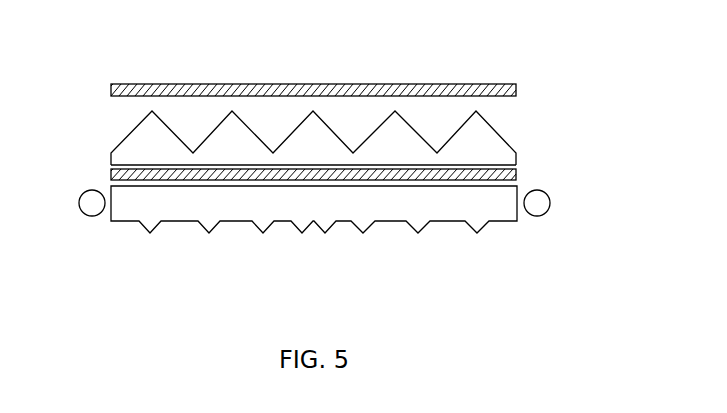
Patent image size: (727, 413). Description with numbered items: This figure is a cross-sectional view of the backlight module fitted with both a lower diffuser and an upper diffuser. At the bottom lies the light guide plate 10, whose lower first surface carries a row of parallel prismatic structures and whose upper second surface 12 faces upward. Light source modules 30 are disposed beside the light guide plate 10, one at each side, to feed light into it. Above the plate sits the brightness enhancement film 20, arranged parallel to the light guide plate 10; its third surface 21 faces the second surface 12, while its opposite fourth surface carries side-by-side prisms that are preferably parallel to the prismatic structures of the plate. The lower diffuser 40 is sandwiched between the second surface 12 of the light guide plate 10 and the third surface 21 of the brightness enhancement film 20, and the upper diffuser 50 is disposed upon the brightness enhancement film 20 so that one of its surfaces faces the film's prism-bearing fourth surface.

The light guide plate 10 is at (110, 217).
The second surface 12 is at (514, 184).
The brightness enhancement film 20 is at (519, 157).
The third surface 21 is at (120, 165).
The light source module 30 is at (79, 202).
The lower diffuser 40 is at (518, 173).
The upper diffuser 50 is at (518, 90).